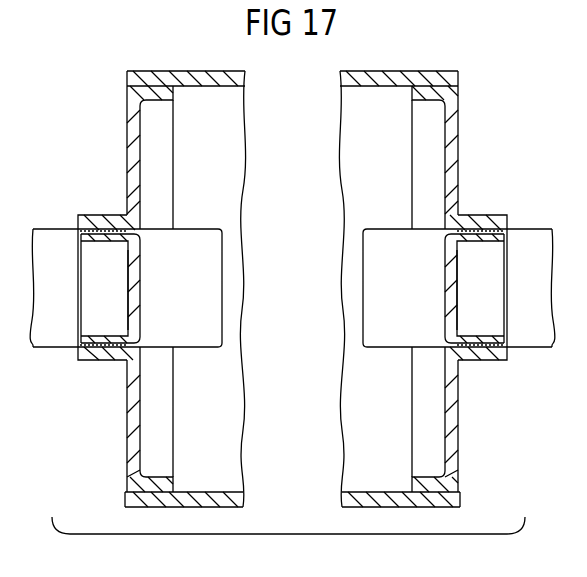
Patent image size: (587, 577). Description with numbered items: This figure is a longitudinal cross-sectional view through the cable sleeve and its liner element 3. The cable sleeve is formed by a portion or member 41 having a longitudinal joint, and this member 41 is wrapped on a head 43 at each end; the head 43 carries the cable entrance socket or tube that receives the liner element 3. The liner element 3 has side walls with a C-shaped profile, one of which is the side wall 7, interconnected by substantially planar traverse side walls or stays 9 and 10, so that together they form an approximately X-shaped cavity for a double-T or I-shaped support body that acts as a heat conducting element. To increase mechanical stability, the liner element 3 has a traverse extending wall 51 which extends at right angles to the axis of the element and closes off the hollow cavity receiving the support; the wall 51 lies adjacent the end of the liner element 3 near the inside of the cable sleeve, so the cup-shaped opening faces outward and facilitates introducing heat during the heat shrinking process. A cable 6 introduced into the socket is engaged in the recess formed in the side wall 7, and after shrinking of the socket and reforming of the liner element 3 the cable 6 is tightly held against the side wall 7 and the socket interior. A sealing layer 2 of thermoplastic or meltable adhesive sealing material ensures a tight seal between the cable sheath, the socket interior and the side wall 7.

The sealing layer 2 is at (71, 349).
The liner element 3 is at (150, 330).
The cable 6 is at (195, 238).
The side wall 7 is at (92, 290).
The traverse side wall 9 is at (88, 243).
The traverse side wall 10 is at (95, 334).
The portion of cable sleeve 41 is at (152, 72).
The head 43 is at (131, 136).
The traverse extending wall 51 is at (131, 295).